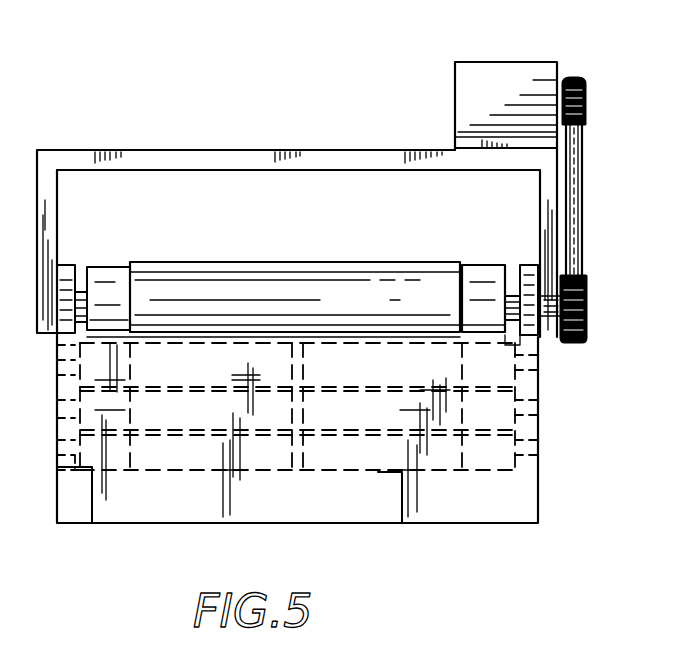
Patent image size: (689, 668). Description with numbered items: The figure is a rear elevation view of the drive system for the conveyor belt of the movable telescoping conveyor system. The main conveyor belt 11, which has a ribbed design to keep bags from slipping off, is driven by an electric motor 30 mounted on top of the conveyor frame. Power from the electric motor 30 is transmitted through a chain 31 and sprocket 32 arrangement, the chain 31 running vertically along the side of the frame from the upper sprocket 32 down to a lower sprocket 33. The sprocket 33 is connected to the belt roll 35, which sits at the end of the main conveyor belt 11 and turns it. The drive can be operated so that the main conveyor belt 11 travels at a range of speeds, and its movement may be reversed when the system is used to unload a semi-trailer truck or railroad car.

The main conveyor belt 11 is at (152, 262).
The electric motor 30 is at (512, 60).
The chain 31 is at (590, 200).
The sprocket 32 is at (588, 95).
The sprocket 33 is at (588, 312).
The belt roll 35 is at (487, 262).